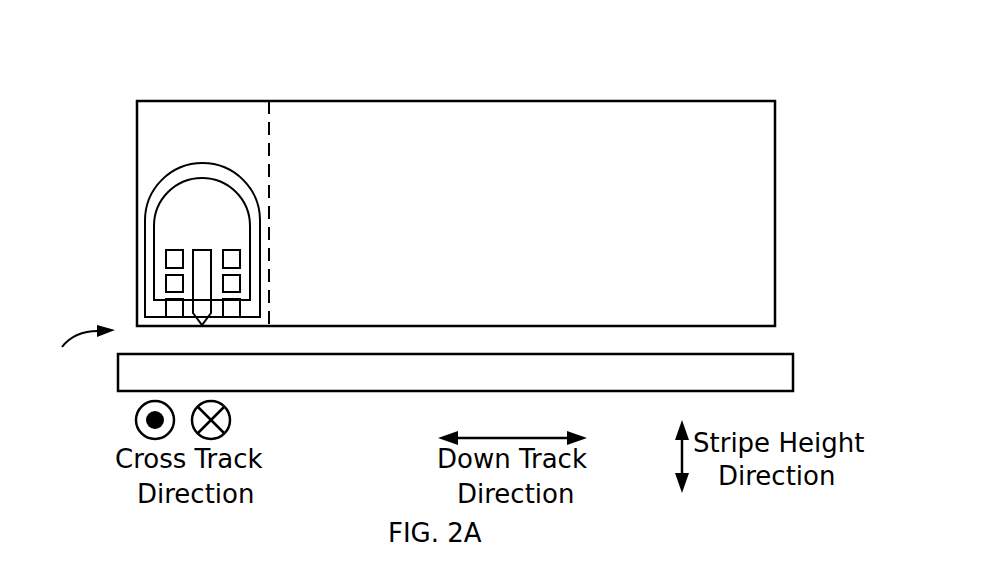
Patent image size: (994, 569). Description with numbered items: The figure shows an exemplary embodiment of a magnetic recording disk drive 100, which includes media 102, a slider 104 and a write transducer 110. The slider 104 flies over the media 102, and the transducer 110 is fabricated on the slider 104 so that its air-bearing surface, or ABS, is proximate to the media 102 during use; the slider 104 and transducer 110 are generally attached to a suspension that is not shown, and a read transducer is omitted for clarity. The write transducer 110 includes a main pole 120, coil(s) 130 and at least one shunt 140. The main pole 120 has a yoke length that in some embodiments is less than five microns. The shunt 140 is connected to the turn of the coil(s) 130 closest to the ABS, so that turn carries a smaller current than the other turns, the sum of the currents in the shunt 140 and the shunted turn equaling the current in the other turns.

The disk drive 100 is at (460, 40).
The media 102 is at (118, 390).
The slider 104 is at (775, 175).
The write transducer 110 is at (269, 158).
The main pole 120 is at (198, 248).
The coil(s) 130 is at (133, 305).
The shunt 140 is at (163, 178).